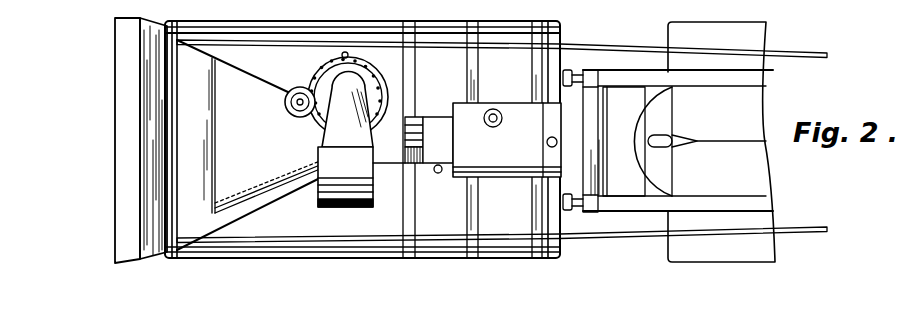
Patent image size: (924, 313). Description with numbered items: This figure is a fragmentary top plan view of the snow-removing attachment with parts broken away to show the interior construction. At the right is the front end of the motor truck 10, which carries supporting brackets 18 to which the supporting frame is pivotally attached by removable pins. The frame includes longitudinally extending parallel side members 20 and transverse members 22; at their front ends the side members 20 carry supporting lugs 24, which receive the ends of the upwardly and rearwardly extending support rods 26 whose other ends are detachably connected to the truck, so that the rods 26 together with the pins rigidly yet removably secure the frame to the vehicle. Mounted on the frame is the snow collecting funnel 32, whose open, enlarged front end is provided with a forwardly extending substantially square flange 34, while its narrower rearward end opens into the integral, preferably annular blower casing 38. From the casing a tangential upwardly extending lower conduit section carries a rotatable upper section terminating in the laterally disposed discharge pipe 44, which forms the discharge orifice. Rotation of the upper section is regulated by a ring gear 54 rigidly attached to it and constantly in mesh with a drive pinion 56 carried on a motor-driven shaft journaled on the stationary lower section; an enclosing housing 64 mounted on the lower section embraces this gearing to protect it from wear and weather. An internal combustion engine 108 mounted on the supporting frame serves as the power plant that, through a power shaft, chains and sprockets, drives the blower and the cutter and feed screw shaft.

The motor truck 10 is at (685, 93).
The supporting brackets 18 is at (623, 79).
The side members 20 is at (450, 30).
The transverse members 22 is at (172, 78).
The supporting lugs 24 is at (198, 42).
The support rods 26 is at (782, 55).
The snow collecting funnel 32 is at (268, 180).
The square flange 34 is at (125, 95).
The blower casing 38 is at (334, 201).
The discharge pipe 44 is at (338, 125).
The ring gear 54 is at (325, 80).
The drive pinion 56 is at (294, 95).
The enclosing housing 64 is at (365, 49).
The internal combustion engine 108 is at (496, 166).